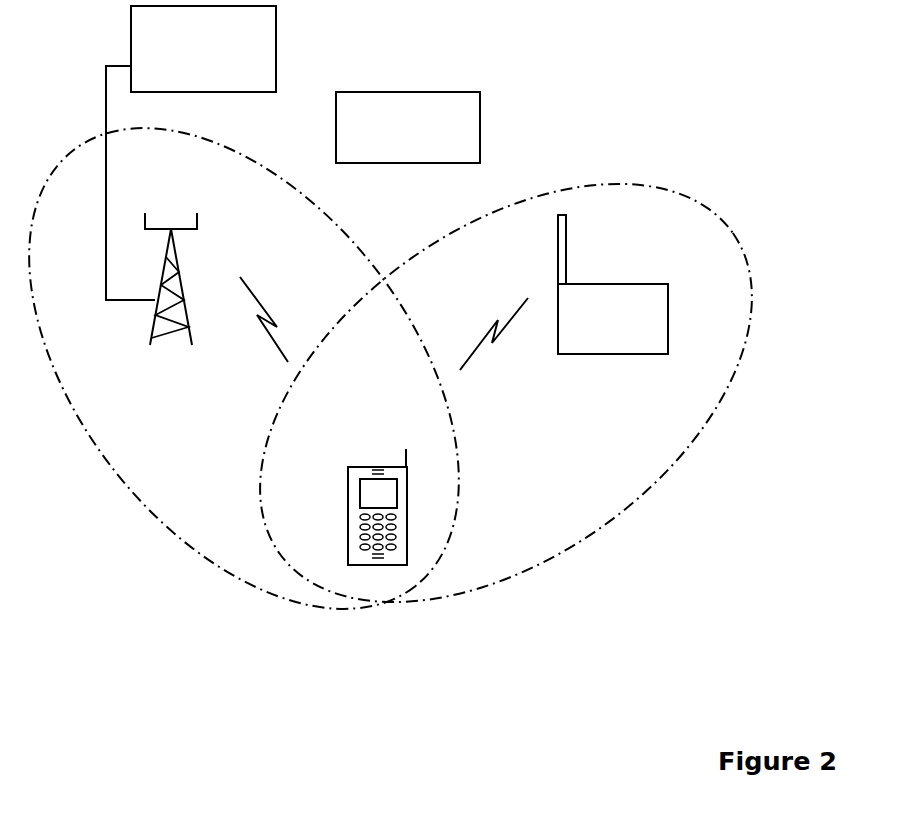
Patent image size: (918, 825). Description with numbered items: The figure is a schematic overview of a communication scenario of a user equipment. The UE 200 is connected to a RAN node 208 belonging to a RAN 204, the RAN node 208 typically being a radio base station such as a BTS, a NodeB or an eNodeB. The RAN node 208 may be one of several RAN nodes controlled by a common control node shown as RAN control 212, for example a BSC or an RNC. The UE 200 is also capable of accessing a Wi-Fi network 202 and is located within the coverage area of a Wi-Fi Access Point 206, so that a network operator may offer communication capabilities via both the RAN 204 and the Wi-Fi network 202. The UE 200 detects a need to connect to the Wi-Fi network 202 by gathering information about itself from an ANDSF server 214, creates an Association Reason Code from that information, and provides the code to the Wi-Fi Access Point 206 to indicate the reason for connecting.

The UE 200 is at (375, 470).
The Wi-Fi network 202 is at (668, 522).
The RAN 204 is at (158, 566).
The Wi-Fi Access Point 206 is at (625, 354).
The RAN node 208 is at (162, 342).
The RAN control 212 is at (276, 50).
The ANDSF server 214 is at (480, 110).